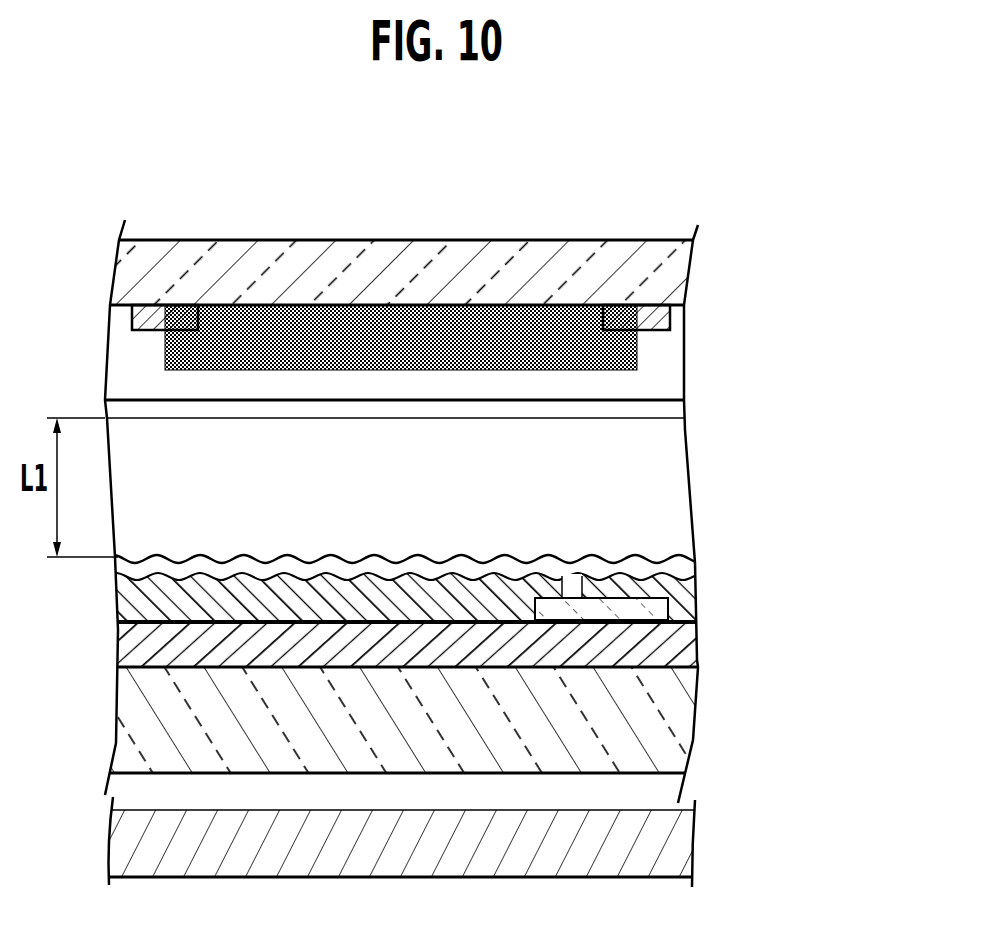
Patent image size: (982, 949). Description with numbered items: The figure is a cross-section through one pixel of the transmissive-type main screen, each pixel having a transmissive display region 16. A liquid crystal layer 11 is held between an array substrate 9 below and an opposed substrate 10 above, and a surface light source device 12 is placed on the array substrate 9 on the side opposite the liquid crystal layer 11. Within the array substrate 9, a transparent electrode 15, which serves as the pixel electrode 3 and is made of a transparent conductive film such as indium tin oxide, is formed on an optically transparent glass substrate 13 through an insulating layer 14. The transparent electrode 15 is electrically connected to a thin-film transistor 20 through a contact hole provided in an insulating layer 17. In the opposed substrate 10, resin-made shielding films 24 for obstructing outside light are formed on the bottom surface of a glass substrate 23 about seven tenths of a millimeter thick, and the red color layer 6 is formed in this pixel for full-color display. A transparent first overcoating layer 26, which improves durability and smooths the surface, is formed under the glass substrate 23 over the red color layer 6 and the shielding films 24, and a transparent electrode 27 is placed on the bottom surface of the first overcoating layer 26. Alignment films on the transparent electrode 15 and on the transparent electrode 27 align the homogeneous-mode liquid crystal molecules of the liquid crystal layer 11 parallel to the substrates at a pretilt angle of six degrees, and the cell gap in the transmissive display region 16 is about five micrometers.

The opposed substrate 10 is at (822, 235).
The glass substrate 23 is at (677, 280).
The shielding films 24 is at (670, 317).
The first overcoating layer 26 is at (668, 343).
The red color layer 6 is at (617, 352).
The transparent electrode 27 is at (673, 410).
The liquid crystal layer 11 is at (667, 490).
The array substrate 9 is at (867, 547).
The pixel electrode 3 is at (822, 552).
The transparent electrode 15 is at (687, 565).
The insulating layer 17 is at (685, 598).
The thin-film transistor 20 is at (697, 657).
The insulating layer 14 is at (690, 688).
The glass substrate 13 is at (685, 720).
The surface light source device 12 is at (680, 830).
The transmissive display region 16 is at (680, 886).